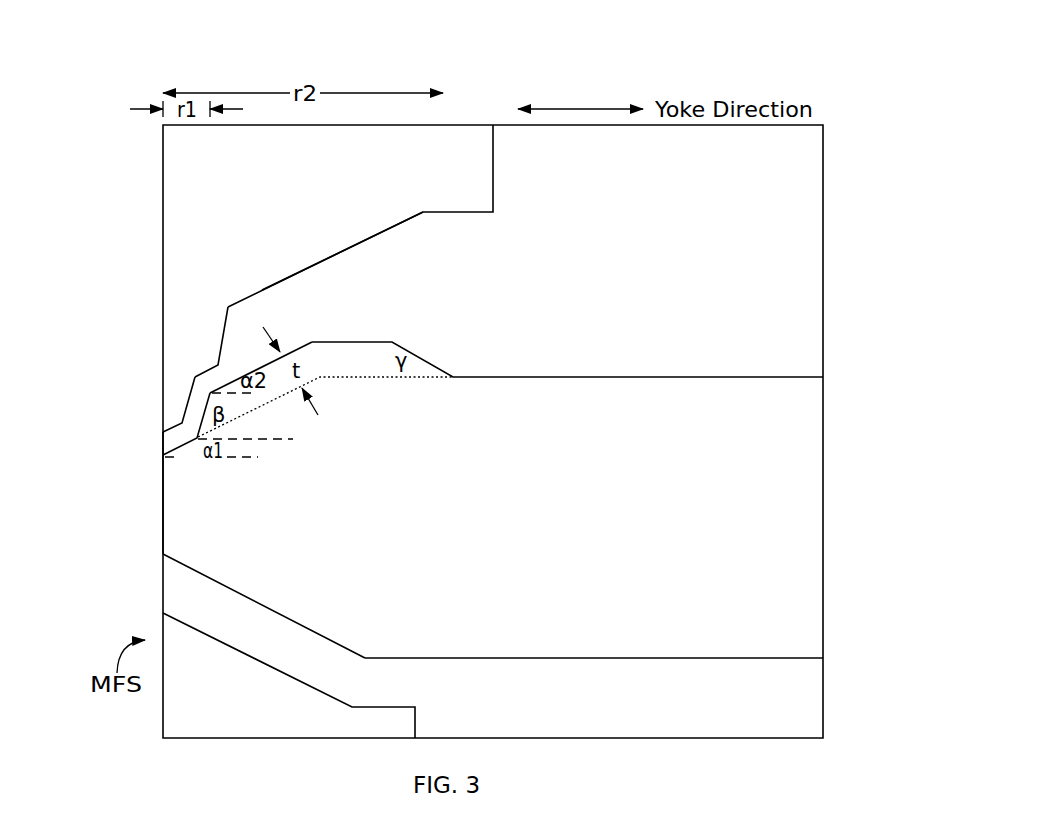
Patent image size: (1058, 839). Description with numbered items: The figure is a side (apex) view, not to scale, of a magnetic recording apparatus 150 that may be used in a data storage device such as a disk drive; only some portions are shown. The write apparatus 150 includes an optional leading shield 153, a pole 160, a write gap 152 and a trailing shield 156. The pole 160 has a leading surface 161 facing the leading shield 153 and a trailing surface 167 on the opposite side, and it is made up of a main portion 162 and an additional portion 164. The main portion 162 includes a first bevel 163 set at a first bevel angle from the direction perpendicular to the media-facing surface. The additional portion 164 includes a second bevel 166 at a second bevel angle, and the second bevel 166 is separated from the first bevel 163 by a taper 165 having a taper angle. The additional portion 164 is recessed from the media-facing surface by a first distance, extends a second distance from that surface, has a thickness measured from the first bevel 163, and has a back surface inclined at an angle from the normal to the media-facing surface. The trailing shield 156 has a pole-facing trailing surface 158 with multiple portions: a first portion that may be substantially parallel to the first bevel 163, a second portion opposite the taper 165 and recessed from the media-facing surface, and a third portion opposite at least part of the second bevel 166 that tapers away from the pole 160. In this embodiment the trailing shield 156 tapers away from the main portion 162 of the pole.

The magnetic recording apparatus 150 is at (467, 41).
The write gap 152 is at (163, 442).
The leading shield 153 is at (289, 675).
The trailing shield 156 is at (351, 216).
The trailing surface 158 is at (303, 247).
The pole 160 is at (147, 487).
The leading surface 161 is at (183, 580).
The main portion 162 is at (594, 559).
The first bevel 163 is at (188, 452).
The additional portion 164 is at (510, 389).
The taper 165 is at (193, 408).
The second bevel 166 is at (238, 368).
The trailing surface 167 is at (320, 322).